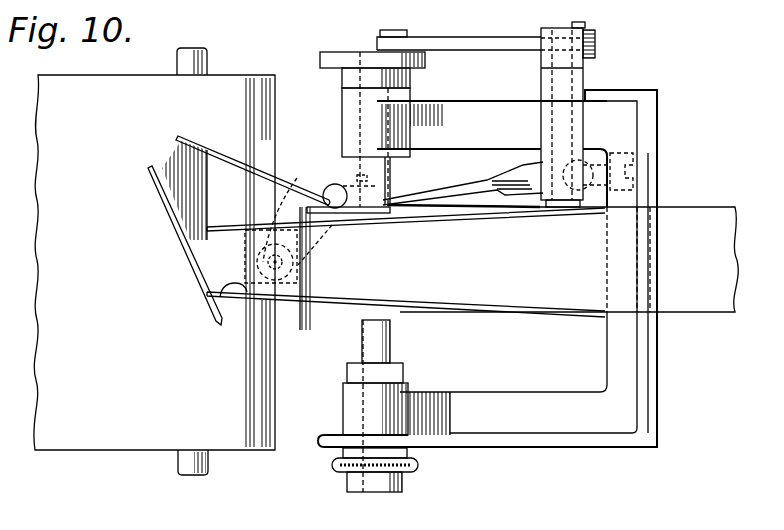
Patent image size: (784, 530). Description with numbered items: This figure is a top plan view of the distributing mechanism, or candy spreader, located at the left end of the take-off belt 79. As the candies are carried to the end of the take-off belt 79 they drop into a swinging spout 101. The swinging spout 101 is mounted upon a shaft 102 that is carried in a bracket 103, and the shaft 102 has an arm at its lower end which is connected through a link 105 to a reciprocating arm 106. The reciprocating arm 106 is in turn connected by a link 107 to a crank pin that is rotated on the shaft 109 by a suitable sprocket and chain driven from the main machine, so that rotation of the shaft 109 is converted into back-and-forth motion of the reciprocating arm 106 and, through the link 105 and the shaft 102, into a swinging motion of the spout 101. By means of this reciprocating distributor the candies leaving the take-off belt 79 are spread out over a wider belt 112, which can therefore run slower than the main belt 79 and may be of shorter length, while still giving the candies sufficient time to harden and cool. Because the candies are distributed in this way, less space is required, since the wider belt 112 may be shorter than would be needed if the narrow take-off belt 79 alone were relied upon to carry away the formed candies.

The take-off belt 79 is at (687, 218).
The swinging spout 101 is at (215, 170).
The shaft 102 is at (311, 192).
The bracket 103 is at (263, 262).
The link 105 is at (505, 175).
The reciprocating arm 106 is at (600, 166).
The link 107 is at (472, 43).
The shaft 109 is at (372, 493).
The wider belt 112 is at (120, 437).